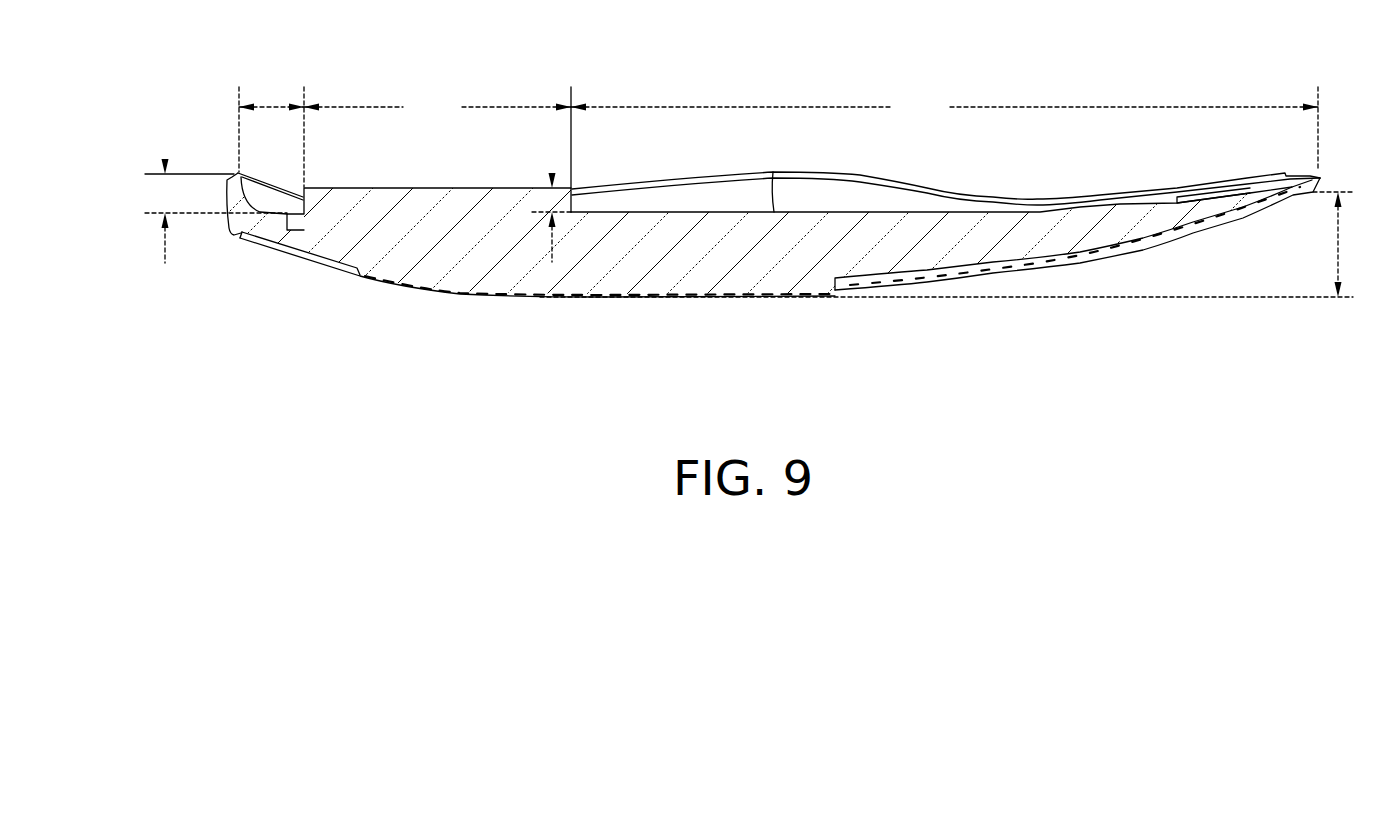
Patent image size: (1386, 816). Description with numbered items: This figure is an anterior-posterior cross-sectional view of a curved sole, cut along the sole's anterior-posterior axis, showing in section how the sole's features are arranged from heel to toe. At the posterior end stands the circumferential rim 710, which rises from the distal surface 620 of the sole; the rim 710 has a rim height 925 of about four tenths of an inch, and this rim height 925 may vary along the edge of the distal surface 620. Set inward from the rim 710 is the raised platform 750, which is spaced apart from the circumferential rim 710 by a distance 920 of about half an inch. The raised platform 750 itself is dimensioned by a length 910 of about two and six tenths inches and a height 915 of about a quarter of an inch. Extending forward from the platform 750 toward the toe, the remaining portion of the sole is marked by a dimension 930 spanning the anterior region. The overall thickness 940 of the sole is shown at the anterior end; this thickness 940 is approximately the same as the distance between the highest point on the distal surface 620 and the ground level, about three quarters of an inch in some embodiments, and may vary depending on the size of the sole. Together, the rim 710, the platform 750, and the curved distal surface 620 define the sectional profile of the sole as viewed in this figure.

The distal surface 620 is at (1207, 234).
The circumferential rim 710 is at (231, 163).
The raised platform 750 is at (352, 174).
The length 910 is at (437, 137).
The height 915 is at (552, 174).
The distance 920 is at (277, 102).
The rim height 925 is at (165, 160).
The forefoot length 930 is at (944, 129).
The thickness 940 is at (946, 244).